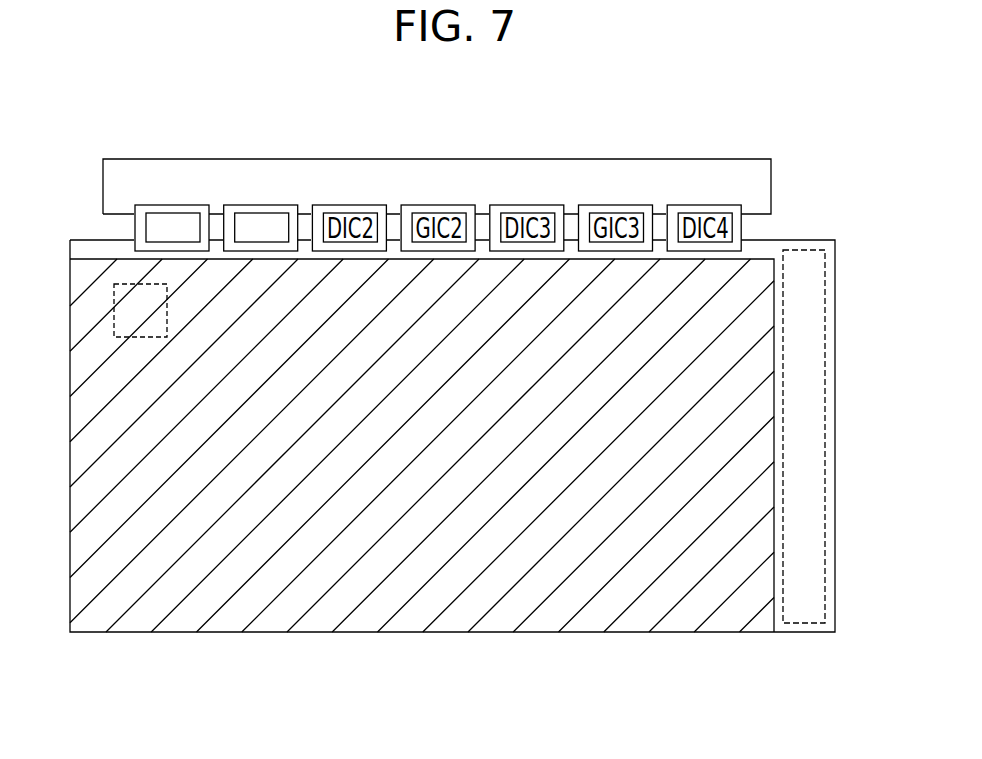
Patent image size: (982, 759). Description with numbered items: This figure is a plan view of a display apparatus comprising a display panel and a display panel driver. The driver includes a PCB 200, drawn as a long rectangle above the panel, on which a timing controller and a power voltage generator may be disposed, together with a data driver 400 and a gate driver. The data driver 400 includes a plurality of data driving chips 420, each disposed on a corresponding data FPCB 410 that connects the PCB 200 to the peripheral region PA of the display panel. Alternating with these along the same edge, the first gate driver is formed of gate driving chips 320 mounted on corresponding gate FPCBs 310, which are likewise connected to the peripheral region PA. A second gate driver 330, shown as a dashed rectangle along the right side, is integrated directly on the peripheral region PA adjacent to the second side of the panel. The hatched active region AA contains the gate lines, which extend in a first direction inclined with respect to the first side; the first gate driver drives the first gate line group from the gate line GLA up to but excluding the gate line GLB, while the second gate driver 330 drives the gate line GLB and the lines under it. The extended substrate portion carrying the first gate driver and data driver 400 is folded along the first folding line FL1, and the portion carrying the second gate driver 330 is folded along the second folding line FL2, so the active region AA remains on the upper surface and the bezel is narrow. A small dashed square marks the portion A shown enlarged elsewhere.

The data driver 400 is at (175, 162).
The data FPCB 410 is at (179, 205).
The data driving chip 420 is at (217, 107).
The gate FPCB 310 is at (275, 205).
The gate driving chip 320 is at (249, 213).
The second gate driver 330 is at (808, 623).
The PCB 200 is at (443, 170).
The peripheral region PA is at (758, 245).
The active region AA is at (405, 623).
The gate line GLA is at (98, 274).
The gate line GLB is at (760, 293).
The first folding line FL1 is at (85, 252).
The second folding line FL2 is at (765, 628).
The portion A is at (116, 311).